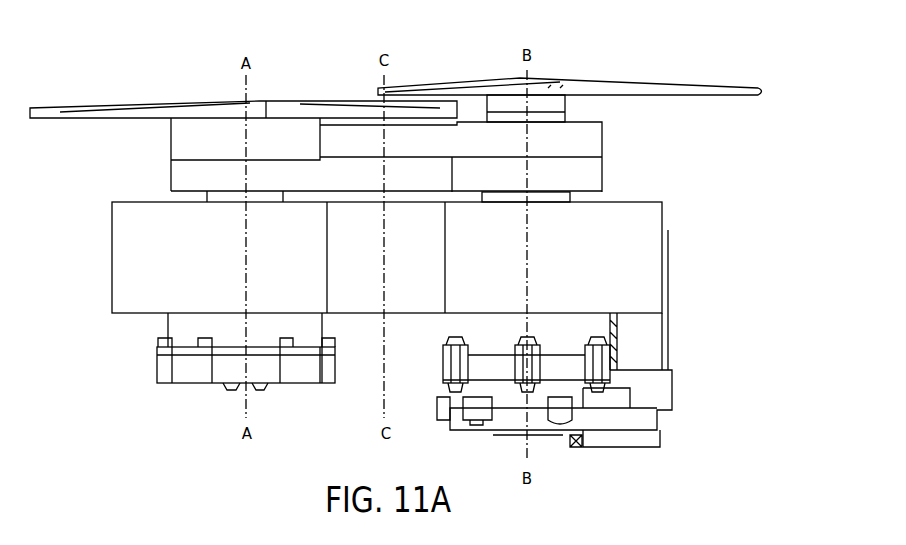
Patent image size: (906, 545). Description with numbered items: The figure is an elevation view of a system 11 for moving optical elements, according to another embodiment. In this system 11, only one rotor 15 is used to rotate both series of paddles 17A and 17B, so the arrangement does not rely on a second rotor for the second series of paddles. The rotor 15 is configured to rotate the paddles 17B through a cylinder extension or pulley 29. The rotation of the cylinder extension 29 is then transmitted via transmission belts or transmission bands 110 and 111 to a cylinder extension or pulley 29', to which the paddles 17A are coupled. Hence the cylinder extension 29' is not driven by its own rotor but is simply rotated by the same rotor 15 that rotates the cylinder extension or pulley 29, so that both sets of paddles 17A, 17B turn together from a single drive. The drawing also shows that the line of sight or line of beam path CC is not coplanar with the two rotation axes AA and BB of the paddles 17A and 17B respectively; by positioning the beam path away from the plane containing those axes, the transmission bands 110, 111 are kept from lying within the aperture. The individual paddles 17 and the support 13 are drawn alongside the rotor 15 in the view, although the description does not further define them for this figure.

The system 11 is at (476, 64).
The first bearing support 13 is at (362, 326).
The rotor 15 is at (685, 353).
The blade 17 is at (366, 110).
The paddles 17A is at (66, 73).
The paddles 17B is at (723, 70).
The cylinder extension or pulley 29 is at (404, 178).
The cylinder extension or pulley 29' is at (223, 154).
The transmission belt or transmission band 110 is at (498, 146).
The transmission belt or transmission band 111 is at (427, 191).